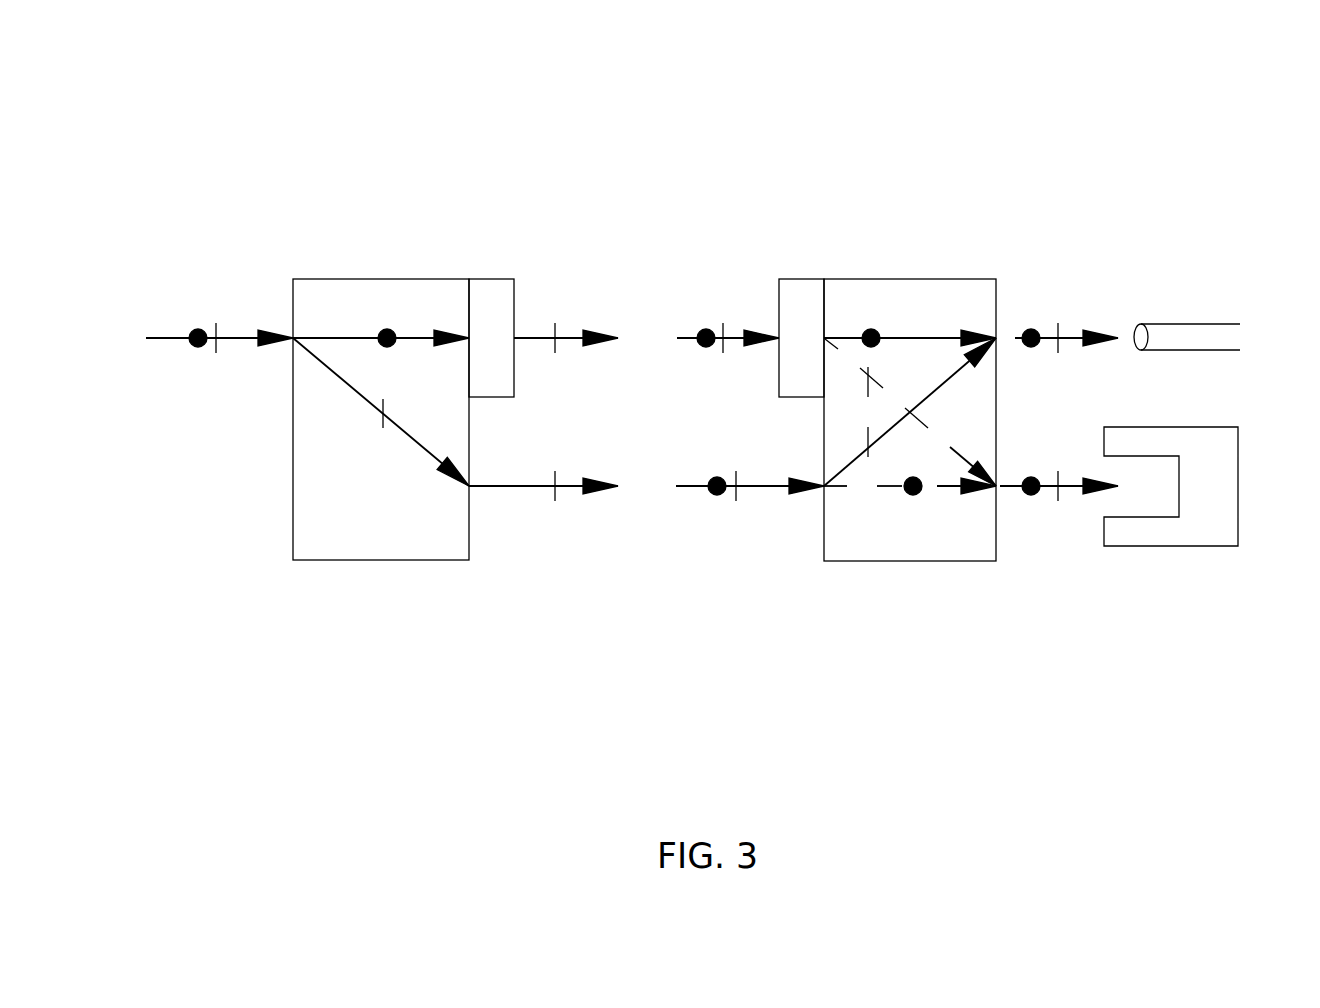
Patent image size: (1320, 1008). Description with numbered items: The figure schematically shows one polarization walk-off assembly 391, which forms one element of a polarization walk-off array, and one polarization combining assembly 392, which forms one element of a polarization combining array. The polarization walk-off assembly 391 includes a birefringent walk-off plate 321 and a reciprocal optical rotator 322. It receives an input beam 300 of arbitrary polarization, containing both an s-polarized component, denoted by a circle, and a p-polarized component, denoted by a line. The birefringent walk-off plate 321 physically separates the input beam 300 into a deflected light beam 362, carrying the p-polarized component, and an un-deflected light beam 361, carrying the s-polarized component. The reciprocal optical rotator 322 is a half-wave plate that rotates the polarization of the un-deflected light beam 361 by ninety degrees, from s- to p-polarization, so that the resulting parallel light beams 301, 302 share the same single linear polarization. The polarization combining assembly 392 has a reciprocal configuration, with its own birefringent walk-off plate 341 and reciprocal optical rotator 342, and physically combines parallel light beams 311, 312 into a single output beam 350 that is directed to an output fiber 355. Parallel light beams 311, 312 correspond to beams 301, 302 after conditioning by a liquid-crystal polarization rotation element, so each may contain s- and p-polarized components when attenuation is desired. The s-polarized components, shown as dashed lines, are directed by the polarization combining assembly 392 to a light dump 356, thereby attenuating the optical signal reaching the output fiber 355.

The input beam 300 is at (237, 338).
The parallel light beam 301 is at (535, 338).
The parallel light beam 302 is at (502, 486).
The parallel light beam 311 is at (733, 338).
The parallel light beam 312 is at (762, 486).
The birefringent walk-off plate 321 is at (372, 279).
The reciprocal optical rotator 322 is at (493, 279).
The birefringent walk-off plate 341 is at (963, 279).
The reciprocal optical rotator 342 is at (803, 279).
The single output beam 350 is at (1074, 331).
The output fiber 355 is at (1192, 324).
The light dump 356 is at (1148, 546).
The un-deflected light beam 361 is at (417, 338).
The deflected light beam 362 is at (424, 452).
The polarization walk-off assembly 391 is at (278, 113).
The polarization combining assembly 392 is at (803, 113).